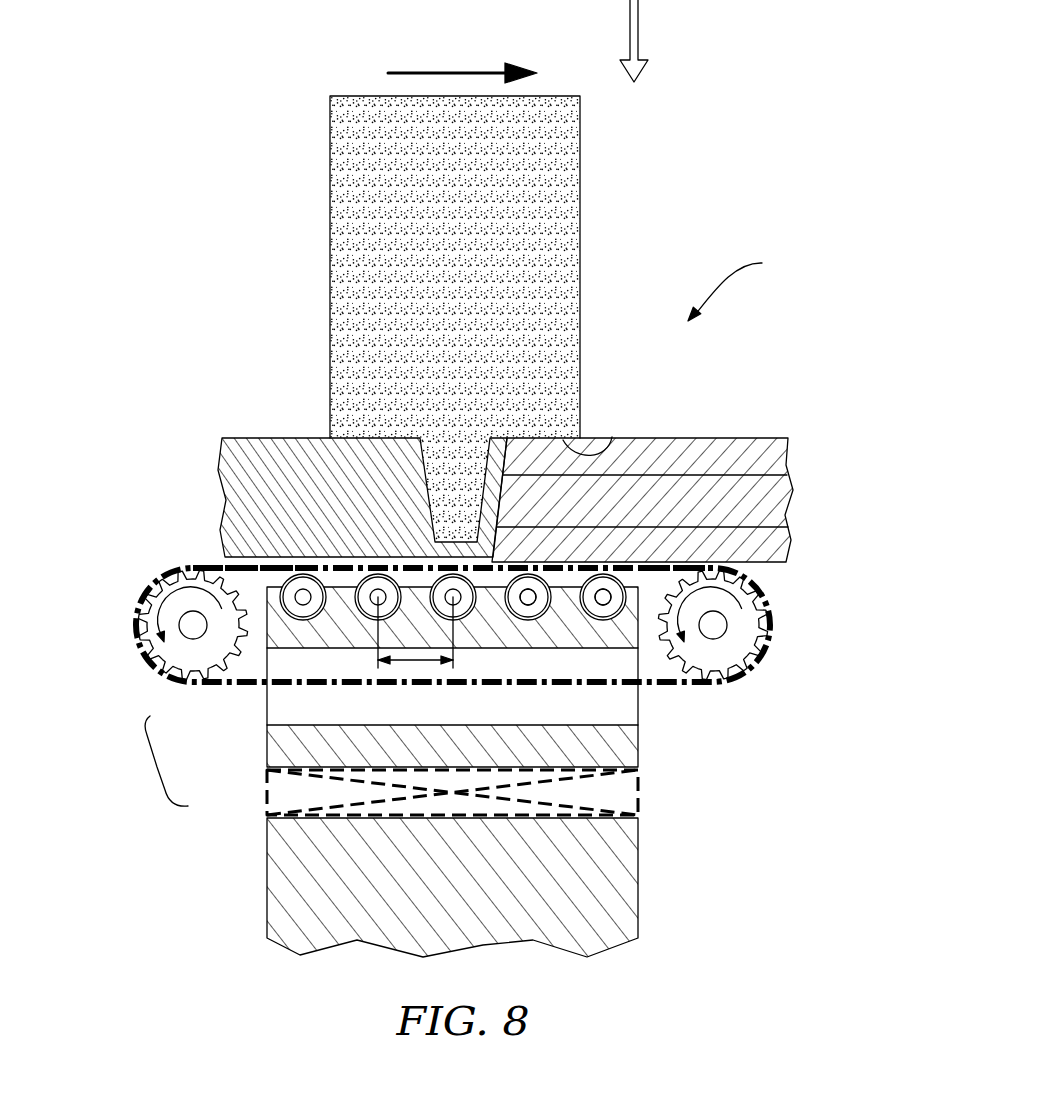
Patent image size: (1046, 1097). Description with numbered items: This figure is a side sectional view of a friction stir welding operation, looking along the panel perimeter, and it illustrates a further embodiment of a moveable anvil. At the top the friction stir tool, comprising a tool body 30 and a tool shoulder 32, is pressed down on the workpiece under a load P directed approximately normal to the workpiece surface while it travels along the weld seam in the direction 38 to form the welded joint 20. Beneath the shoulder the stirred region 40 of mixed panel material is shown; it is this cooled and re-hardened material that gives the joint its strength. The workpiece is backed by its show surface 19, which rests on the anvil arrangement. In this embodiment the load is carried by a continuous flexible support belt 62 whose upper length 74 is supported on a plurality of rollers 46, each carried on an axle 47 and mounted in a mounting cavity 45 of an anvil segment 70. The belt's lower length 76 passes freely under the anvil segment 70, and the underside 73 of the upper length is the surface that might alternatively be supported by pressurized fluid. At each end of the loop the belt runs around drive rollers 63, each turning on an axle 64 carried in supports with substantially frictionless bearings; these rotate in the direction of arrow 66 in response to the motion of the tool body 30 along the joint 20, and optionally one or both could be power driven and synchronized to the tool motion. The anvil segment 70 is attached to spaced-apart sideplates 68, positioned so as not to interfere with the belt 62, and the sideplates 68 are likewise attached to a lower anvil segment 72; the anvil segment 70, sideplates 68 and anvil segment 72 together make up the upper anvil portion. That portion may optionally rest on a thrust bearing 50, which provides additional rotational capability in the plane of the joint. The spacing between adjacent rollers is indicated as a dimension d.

The show surface 19 is at (593, 548).
The welded joint 20 is at (736, 286).
The tool body 30 is at (580, 270).
The tool shoulder 32 is at (612, 437).
The direction 38 is at (472, 70).
The stirred region 40 is at (277, 467).
The mounting cavity 45 is at (642, 583).
The rollers 46 is at (528, 600).
The axles 47 is at (600, 600).
The thrust bearing 50 is at (627, 797).
The flexible support belt 62 is at (745, 673).
The drive rollers 63 is at (140, 612).
The axle 64 is at (192, 627).
The arrow 66 is at (168, 613).
The sideplates 68 is at (283, 695).
The anvil segment 70 is at (312, 640).
The anvil segment 72 is at (340, 685).
The underside 73 is at (670, 593).
The upper length 74 is at (207, 567).
The lower length 76 is at (267, 790).
The roller spacing d is at (413, 663).
The load P is at (640, 41).